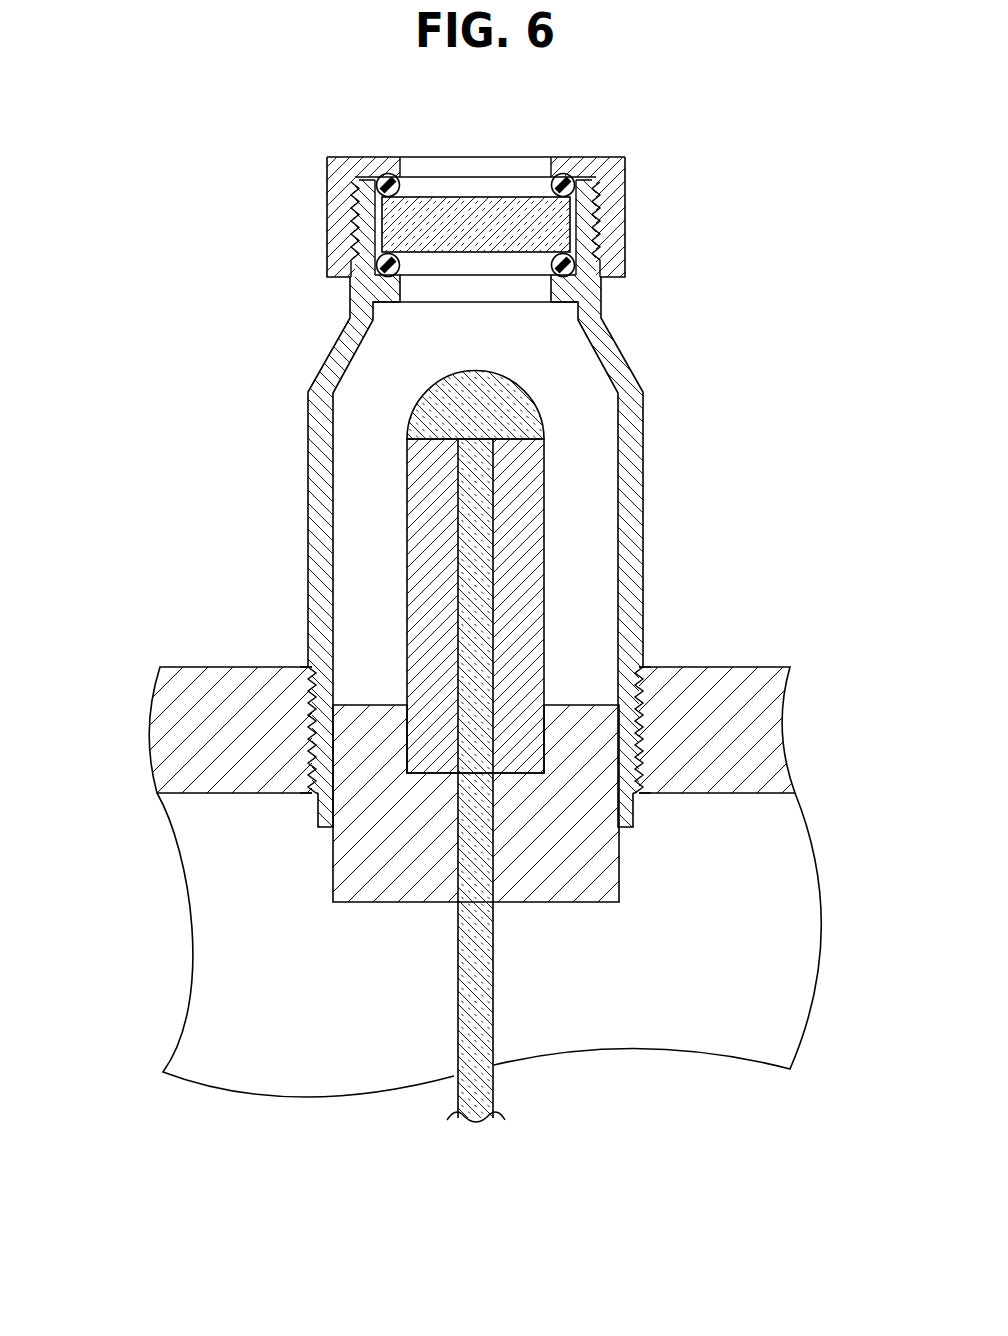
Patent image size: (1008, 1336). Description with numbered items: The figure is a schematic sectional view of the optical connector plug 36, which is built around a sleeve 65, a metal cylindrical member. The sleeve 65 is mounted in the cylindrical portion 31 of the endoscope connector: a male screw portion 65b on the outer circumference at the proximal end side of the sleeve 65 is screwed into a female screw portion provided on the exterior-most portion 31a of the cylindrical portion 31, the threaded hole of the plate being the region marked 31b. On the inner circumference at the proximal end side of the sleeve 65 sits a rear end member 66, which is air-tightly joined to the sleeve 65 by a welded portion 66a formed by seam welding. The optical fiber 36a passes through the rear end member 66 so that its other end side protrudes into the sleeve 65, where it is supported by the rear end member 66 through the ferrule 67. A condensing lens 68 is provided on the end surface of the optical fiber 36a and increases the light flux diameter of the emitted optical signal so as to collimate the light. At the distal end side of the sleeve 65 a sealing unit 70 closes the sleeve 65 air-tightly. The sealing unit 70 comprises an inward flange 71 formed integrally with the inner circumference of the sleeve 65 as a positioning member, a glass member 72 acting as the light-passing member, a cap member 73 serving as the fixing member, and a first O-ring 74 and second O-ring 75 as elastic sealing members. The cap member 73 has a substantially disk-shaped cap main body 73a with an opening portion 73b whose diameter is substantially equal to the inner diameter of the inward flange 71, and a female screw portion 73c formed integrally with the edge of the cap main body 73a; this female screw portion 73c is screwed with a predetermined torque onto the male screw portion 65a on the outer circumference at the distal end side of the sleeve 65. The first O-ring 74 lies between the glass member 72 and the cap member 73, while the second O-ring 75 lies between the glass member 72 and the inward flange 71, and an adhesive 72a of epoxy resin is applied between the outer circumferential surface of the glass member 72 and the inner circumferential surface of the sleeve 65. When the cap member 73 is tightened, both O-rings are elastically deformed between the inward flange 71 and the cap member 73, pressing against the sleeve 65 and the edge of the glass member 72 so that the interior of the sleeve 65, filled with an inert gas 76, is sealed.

The cylindrical portion 31 is at (173, 667).
The exterior-most portion 31a is at (190, 743).
The threaded hole of plate 31b is at (325, 673).
The optical connector plug 36 is at (776, 376).
The optical fiber 36a is at (483, 530).
The sleeve 65 is at (640, 490).
The male screw portion 65a is at (352, 186).
The male screw portion 65b is at (307, 717).
The rear end member 66 is at (605, 738).
The welded portion 66a is at (637, 810).
The ferrule 67 is at (532, 592).
The condensing lens 68 is at (527, 408).
The sealing unit 70 is at (678, 156).
The inward flange 71 is at (592, 314).
The glass member 72 is at (568, 217).
The adhesive 72a is at (374, 236).
The cap member 73 is at (625, 160).
The cap main body 73a is at (347, 156).
The opening portion 73b is at (405, 167).
The female screw portion 73c is at (355, 208).
The first O-ring 74 is at (574, 184).
The second O-ring 75 is at (574, 263).
The inert gas 76 is at (378, 380).